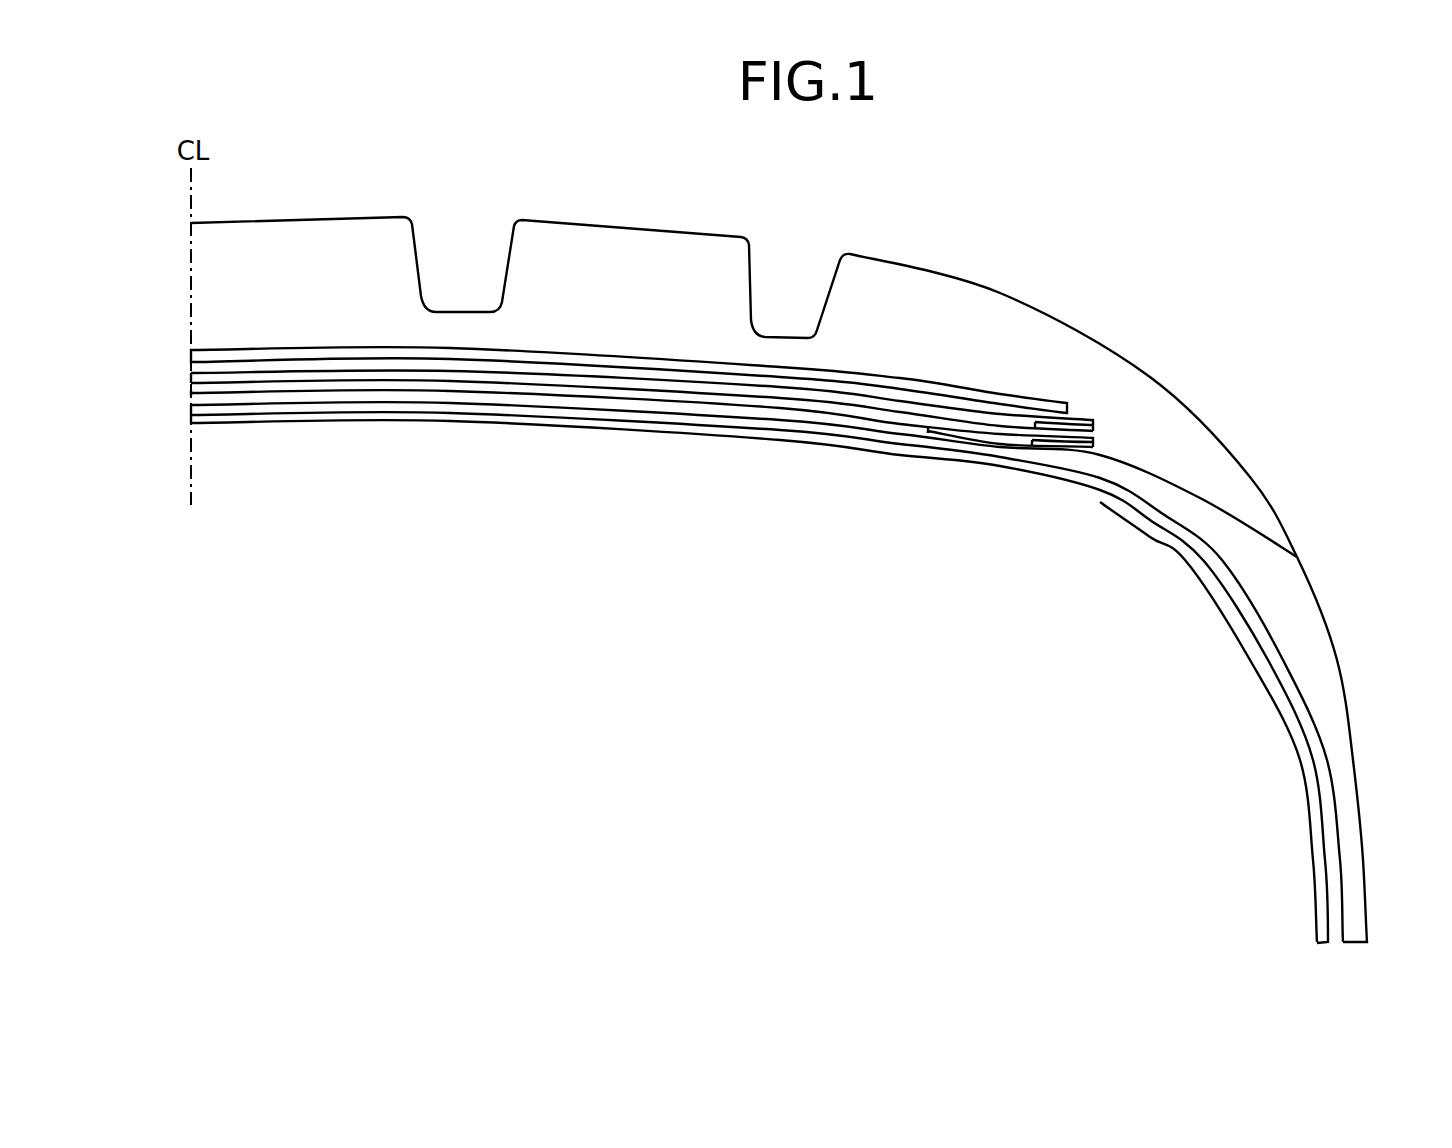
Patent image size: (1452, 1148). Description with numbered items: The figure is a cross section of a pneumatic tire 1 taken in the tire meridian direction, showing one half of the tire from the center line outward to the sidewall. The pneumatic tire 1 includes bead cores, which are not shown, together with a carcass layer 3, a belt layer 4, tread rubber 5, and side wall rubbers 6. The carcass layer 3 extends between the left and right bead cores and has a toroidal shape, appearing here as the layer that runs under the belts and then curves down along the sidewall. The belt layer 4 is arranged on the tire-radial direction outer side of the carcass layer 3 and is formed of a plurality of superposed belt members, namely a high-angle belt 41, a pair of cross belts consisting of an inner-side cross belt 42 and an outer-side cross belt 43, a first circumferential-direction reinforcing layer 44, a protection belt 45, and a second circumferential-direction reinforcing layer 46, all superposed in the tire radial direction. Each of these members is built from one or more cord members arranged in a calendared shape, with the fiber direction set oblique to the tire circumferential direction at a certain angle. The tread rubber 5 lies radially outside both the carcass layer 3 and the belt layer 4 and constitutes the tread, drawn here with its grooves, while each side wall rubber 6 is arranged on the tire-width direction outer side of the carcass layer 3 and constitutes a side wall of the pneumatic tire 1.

The pneumatic tire 1 is at (799, 568).
The carcass layer 3 is at (1250, 603).
The belt layer 4 is at (744, 435).
The tread rubber 5 is at (904, 288).
The sidewall rubber 6 is at (1318, 652).
The high-angle belt 41 is at (832, 415).
The inner-side cross belt 42 is at (865, 410).
The outer-side cross belt 43 is at (905, 398).
The first circumferential-direction reinforcing layer 44 is at (955, 408).
The protection belt 45 is at (838, 376).
The second circumferential-direction reinforcing layer 46 is at (988, 436).